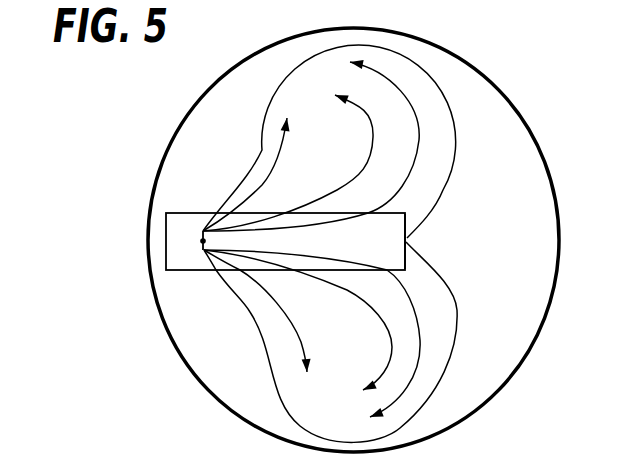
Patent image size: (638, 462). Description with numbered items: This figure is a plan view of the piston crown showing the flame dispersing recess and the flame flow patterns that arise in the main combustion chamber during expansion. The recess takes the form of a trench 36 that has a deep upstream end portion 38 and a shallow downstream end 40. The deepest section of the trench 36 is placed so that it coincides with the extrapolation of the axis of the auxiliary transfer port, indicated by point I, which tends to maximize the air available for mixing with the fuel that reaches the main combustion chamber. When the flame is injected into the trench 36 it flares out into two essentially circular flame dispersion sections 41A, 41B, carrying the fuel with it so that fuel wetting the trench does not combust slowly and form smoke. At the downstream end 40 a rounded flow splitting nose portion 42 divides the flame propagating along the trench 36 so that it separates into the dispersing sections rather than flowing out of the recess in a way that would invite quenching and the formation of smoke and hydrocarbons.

The trench 36 is at (177, 213).
The deep upstream end portion 38 is at (175, 248).
The point on extrapolated axis of auxiliary transfer port I is at (202, 245).
The shallow downstream end 40 is at (397, 258).
The rounded flow splitting nose portion 42 is at (411, 241).
The flame dispersion section 41A is at (283, 100).
The flame dispersion section 41B is at (278, 345).